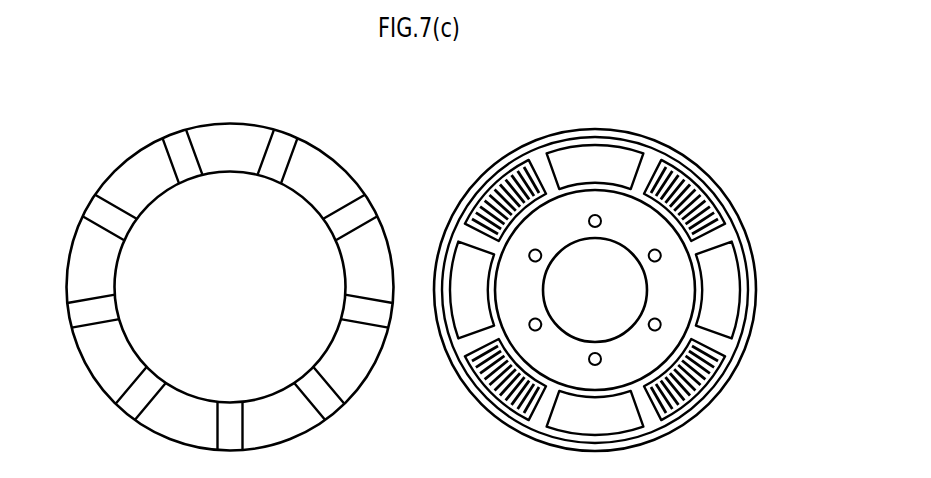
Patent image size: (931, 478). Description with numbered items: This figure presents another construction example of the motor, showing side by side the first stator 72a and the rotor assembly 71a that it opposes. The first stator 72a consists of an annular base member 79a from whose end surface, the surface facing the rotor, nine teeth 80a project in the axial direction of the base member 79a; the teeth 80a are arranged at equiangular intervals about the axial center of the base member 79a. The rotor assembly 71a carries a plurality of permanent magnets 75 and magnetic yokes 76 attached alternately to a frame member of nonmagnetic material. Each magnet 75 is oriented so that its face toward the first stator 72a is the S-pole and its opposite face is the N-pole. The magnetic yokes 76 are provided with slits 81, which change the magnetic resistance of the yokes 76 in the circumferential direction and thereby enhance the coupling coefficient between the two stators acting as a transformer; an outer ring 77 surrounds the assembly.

The first stator 72a is at (247, 108).
The teeth 80a is at (323, 182).
The annular base member 79a is at (358, 387).
The rotor 71a is at (622, 108).
The permanent magnets 75 is at (622, 150).
The magnetic yokes 76 is at (690, 187).
The slits 81 is at (727, 203).
The rotor yoke 77 is at (753, 287).